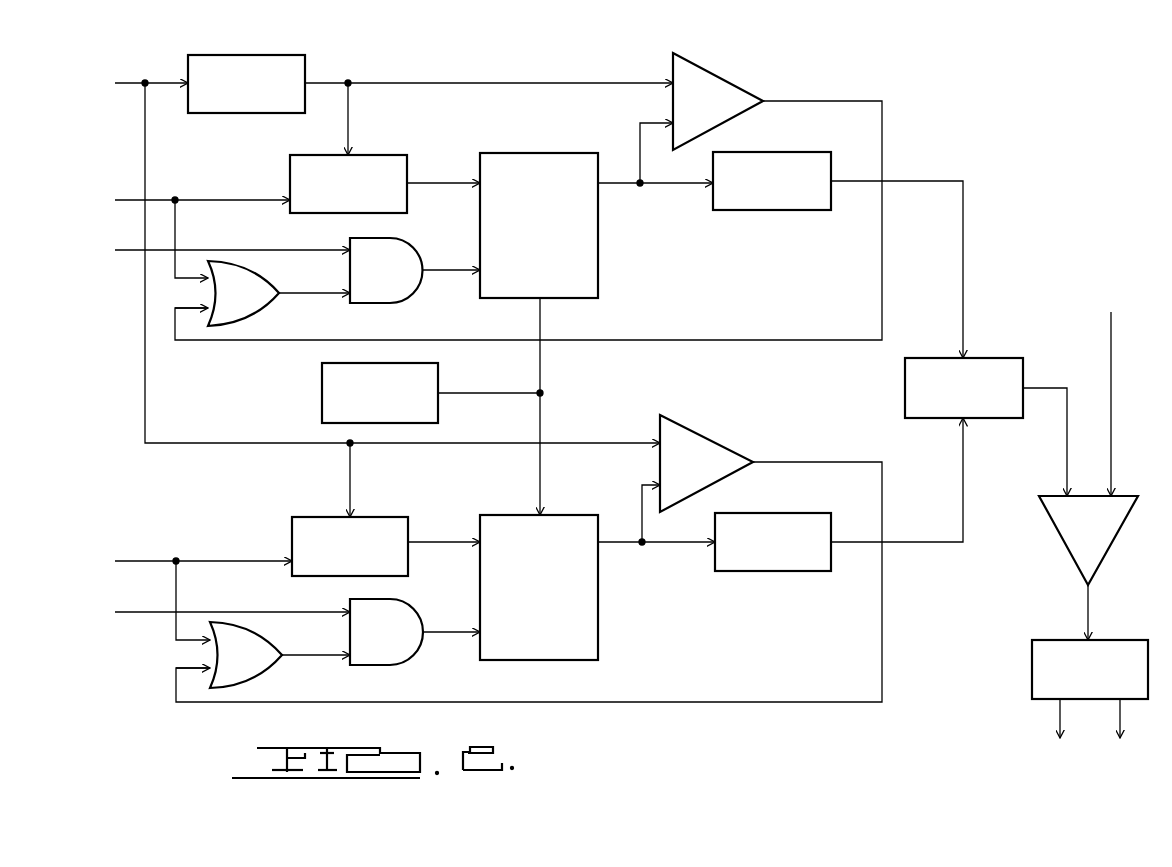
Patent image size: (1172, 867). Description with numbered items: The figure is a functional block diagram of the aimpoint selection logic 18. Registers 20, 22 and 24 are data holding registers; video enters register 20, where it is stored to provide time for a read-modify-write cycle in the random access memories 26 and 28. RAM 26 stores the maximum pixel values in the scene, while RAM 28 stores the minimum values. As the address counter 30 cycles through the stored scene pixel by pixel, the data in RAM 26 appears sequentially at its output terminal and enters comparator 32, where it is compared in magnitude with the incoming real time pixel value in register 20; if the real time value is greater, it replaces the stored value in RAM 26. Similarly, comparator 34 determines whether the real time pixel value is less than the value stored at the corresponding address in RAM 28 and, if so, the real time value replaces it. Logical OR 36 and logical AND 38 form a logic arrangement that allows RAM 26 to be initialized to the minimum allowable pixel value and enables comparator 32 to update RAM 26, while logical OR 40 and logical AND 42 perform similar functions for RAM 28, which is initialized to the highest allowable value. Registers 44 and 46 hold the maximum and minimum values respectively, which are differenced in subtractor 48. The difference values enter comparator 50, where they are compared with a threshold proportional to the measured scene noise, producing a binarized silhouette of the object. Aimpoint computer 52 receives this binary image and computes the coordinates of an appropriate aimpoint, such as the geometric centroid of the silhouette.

The aimpoint selection logic 18 is at (597, 412).
The register 20 is at (270, 79).
The register 22 is at (367, 165).
The register 24 is at (370, 530).
The random access memory 26 is at (569, 225).
The random access memory 28 is at (569, 587).
The address counter 30 is at (345, 393).
The comparator 32 is at (732, 99).
The comparator 34 is at (706, 455).
The logical OR 36 is at (262, 295).
The logical AND 38 is at (406, 256).
The logical OR 40 is at (265, 658).
The logical AND 42 is at (404, 624).
The register 44 is at (775, 205).
The register 46 is at (773, 562).
The subtractor 48 is at (929, 388).
The comparator 50 is at (1099, 540).
The aimpoint computer 52 is at (1058, 669).